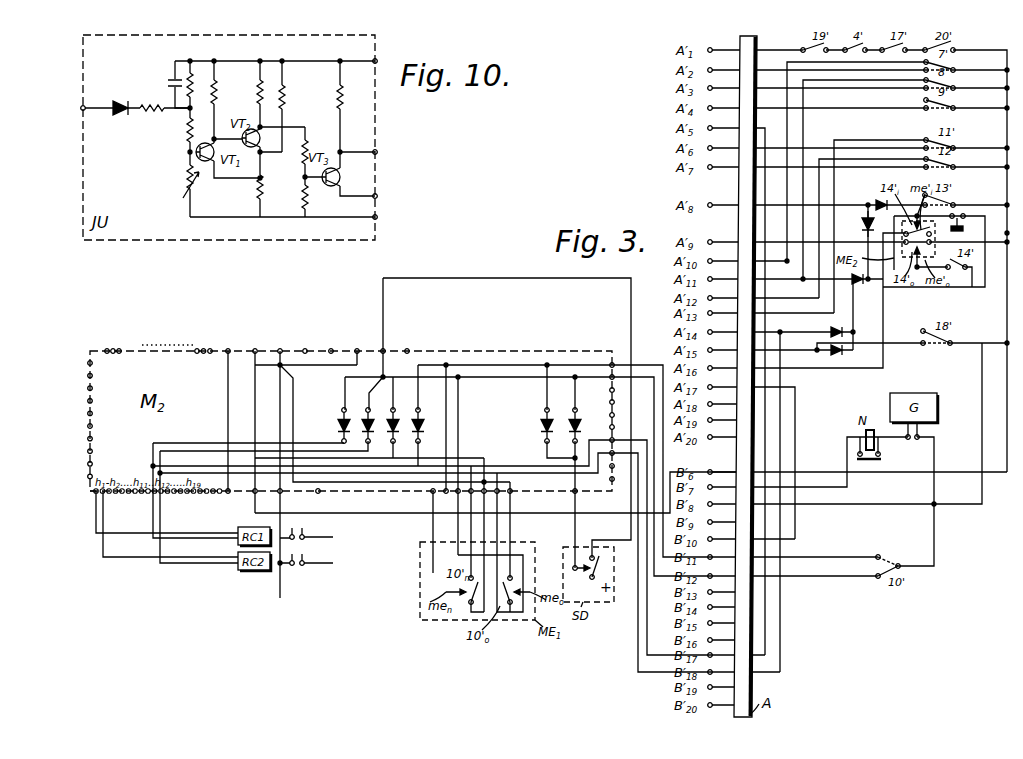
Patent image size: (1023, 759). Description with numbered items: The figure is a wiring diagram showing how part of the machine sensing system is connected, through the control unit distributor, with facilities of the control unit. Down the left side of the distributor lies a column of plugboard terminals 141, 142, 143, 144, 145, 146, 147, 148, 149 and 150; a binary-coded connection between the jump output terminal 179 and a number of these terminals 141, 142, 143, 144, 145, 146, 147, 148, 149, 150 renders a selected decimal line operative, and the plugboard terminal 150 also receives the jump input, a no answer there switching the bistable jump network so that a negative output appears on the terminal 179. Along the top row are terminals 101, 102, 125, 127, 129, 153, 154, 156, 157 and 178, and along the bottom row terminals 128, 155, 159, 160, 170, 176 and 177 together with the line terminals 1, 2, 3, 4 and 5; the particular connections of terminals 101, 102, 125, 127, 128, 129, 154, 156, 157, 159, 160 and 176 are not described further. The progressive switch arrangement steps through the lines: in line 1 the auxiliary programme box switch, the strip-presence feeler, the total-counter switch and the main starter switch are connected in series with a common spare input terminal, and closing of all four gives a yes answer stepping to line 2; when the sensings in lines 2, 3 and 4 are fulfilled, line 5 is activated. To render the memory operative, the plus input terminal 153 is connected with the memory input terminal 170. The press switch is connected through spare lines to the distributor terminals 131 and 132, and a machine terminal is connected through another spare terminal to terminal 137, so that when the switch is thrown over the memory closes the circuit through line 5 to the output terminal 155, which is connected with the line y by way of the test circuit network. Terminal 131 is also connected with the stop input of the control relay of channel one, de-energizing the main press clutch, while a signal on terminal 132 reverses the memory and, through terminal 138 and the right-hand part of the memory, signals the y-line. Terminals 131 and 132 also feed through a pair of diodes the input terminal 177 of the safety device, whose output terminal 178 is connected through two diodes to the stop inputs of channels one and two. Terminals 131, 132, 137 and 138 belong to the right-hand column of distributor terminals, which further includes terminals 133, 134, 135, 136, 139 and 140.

The input terminal 101 is at (109, 344).
The input terminal 102 is at (126, 344).
The input terminals 125 is at (206, 344).
The terminal 127 is at (230, 349).
The terminal 128 is at (229, 494).
The terminal 129 is at (257, 349).
The control unit distributor terminal 131 is at (623, 365).
The control unit distributor terminal 132 is at (623, 377).
The output terminal 133 is at (623, 390).
The output terminal 134 is at (623, 402).
The output terminal 135 is at (623, 415).
The output terminal 136 is at (623, 427).
The control unit distributor terminal 137 is at (623, 440).
The control unit distributor terminal 138 is at (623, 453).
The output terminal 139 is at (623, 466).
The output terminal 140 is at (623, 479).
The plugboard terminal 141 is at (77, 363).
The plugboard terminal 142 is at (77, 376).
The plugboard terminal 143 is at (77, 388).
The plugboard terminal 144 is at (77, 401).
The plugboard terminal 145 is at (77, 413).
The plugboard terminal 146 is at (77, 426).
The plugboard terminal 147 is at (77, 438).
The plugboard terminal 148 is at (77, 451).
The plugboard terminal 149 is at (77, 463).
The plugboard terminal 150 is at (77, 476).
The plus input terminal 153 is at (282, 349).
The terminal 154 is at (307, 349).
The output terminal 155 is at (256, 494).
The terminal 156 is at (333, 349).
The terminal 157 is at (359, 349).
The terminal 159 is at (281, 494).
The terminal 160 is at (319, 494).
The memory input terminal 170 is at (425, 499).
The line 1 is at (444, 499).
The line 2 is at (456, 499).
The line 3 is at (469, 499).
The line 4 is at (482, 499).
The line 5 is at (495, 499).
The terminal 176 is at (511, 494).
The safety device input terminal 177 is at (576, 494).
The safety device output terminal 178 is at (385, 349).
The jump output terminal 179 is at (409, 349).